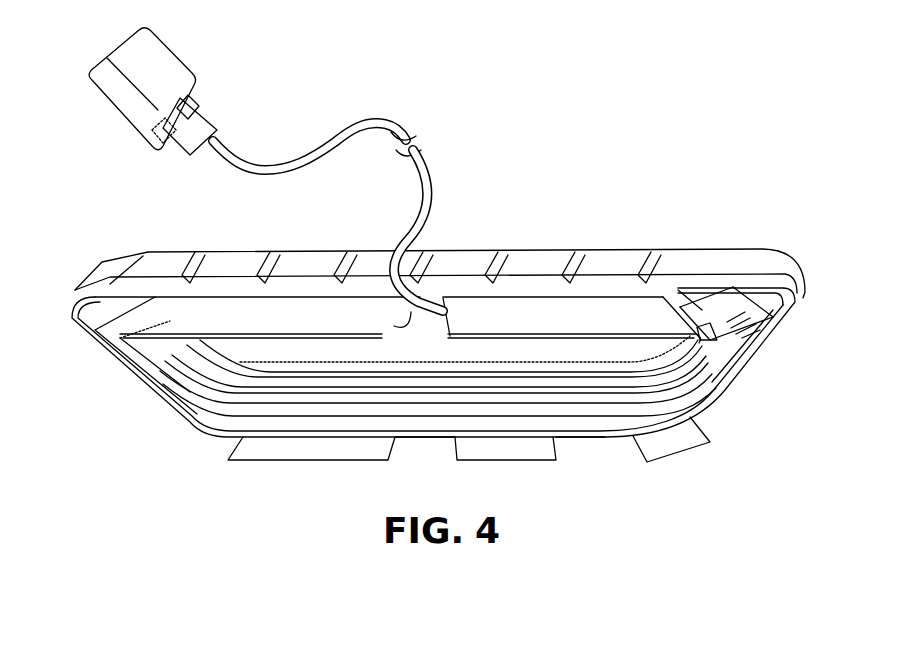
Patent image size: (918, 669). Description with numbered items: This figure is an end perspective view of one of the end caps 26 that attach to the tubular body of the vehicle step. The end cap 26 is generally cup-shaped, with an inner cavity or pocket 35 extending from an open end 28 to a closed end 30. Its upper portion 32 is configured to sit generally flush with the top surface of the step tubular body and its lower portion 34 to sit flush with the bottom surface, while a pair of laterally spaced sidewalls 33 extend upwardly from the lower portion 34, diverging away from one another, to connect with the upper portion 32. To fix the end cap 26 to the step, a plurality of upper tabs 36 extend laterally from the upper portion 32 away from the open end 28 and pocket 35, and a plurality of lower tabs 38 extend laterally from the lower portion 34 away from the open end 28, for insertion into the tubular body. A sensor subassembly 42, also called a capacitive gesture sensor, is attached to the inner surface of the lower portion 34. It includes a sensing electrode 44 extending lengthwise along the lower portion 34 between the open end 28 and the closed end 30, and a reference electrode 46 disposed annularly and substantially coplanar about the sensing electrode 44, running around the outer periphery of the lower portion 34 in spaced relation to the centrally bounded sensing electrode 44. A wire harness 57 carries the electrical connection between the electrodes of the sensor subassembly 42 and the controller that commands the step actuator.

The end cap 26 is at (149, 241).
The open end 28 is at (728, 385).
The closed end 30 is at (380, 337).
The upper portion 32 is at (440, 244).
The sidewalls 33 is at (757, 362).
The lower portion 34 is at (583, 437).
The pocket 35 is at (683, 305).
The upper tabs 36 is at (198, 320).
The lower tabs 38 is at (330, 443).
The sensor subassembly 42 is at (310, 354).
The sensing electrode 44 is at (426, 392).
The reference electrode 46 is at (737, 318).
The wire harness 57 is at (310, 155).